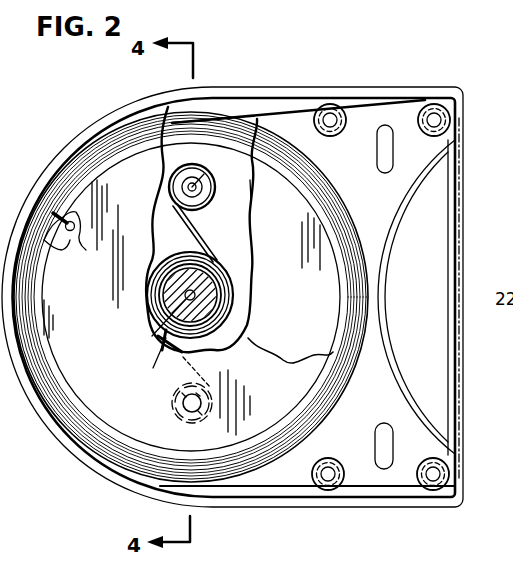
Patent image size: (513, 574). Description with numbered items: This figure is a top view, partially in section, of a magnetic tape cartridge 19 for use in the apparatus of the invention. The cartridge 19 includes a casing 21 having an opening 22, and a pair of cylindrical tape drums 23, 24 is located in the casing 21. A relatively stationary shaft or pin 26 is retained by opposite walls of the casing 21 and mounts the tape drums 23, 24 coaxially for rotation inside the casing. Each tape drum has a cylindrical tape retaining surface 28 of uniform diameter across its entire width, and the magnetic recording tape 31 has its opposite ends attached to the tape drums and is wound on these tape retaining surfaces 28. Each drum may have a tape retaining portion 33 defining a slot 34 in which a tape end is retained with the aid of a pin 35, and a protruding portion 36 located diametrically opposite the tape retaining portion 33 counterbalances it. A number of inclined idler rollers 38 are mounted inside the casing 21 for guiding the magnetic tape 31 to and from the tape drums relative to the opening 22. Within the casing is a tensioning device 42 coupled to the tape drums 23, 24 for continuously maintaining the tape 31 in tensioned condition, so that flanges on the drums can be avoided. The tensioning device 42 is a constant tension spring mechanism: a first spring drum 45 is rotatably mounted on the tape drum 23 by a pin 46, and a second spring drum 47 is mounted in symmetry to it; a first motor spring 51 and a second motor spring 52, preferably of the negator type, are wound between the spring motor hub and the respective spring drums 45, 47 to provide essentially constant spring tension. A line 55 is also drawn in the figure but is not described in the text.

The cartridge 19 is at (277, 84).
The casing 21 is at (103, 108).
The opening 22 is at (431, 251).
The tape drum 23 is at (104, 342).
The tape drum 24 is at (252, 236).
The shaft or pin 26 is at (160, 340).
The cylindrical tape retaining surface 28 is at (80, 152).
The magnetic recording tape 31 is at (447, 330).
The tape retaining portion 33 is at (66, 231).
The slot 34 is at (75, 211).
The pin 35 is at (86, 250).
The protruding portion 36 is at (303, 362).
The inclined idler rollers 38 is at (425, 102).
The tensioning device 42 is at (165, 355).
The first spring drum 45 is at (251, 190).
The pin 46 is at (204, 174).
The second spring drum 47 is at (168, 413).
The first motor spring 51 is at (203, 233).
The second motor spring 52 is at (215, 352).
The center line 55 is at (463, 379).